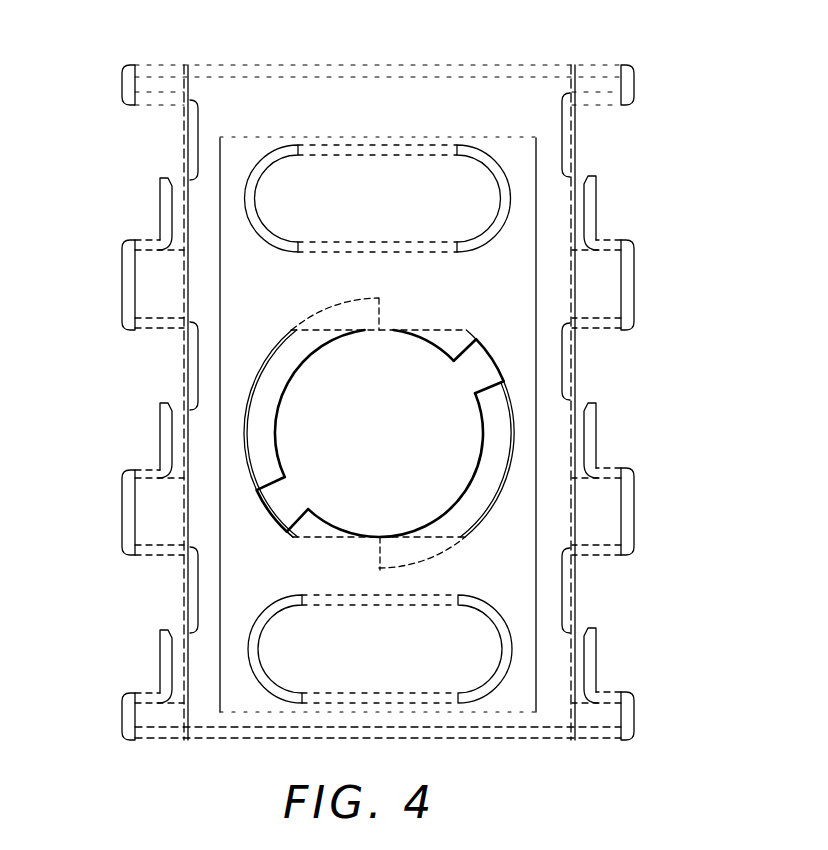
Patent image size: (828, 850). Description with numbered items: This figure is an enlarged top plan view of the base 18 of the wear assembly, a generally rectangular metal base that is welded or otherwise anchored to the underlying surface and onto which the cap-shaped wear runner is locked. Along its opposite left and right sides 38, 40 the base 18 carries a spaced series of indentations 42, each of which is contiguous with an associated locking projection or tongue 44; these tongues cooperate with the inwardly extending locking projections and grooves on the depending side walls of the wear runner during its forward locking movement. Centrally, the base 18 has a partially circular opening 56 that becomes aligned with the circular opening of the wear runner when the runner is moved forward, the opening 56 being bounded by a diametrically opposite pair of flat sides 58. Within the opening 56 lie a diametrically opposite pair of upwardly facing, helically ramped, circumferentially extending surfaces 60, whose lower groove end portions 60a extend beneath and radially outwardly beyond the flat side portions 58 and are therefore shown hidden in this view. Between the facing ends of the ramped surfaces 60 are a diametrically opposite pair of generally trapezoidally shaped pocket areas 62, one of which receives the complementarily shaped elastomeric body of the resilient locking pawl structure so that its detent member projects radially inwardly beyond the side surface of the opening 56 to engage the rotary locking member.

The base 18 is at (424, 68).
The left side 38 is at (186, 137).
The right side 40 is at (575, 145).
The indentations 42 is at (157, 127).
The locking projection or tongue 44 is at (158, 205).
The partially circular opening 56 is at (432, 466).
The flat sides 58 is at (434, 338).
The helically ramped surfaces 60 is at (297, 378).
The lower groove end portions 60a is at (372, 300).
The pocket areas 62 is at (483, 356).